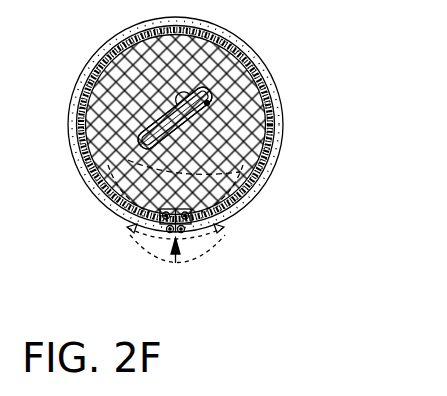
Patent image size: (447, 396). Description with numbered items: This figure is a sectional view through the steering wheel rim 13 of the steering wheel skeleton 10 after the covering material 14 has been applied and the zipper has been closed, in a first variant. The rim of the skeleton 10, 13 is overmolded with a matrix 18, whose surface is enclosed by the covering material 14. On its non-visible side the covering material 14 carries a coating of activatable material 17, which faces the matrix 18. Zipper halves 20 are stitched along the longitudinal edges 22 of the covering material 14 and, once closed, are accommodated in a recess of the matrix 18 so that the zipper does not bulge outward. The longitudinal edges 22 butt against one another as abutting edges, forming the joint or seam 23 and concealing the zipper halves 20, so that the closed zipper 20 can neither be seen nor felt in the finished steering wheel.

The steering wheel skeleton 10 is at (209, 102).
The steering wheel rim 13 is at (209, 102).
The covering material 14 is at (280, 140).
The activatable material 17 is at (271, 108).
The matrix 18 is at (238, 170).
The zipper halves 20 is at (137, 225).
The longitudinal edges 22 is at (168, 232).
The seam 23 is at (175, 271).